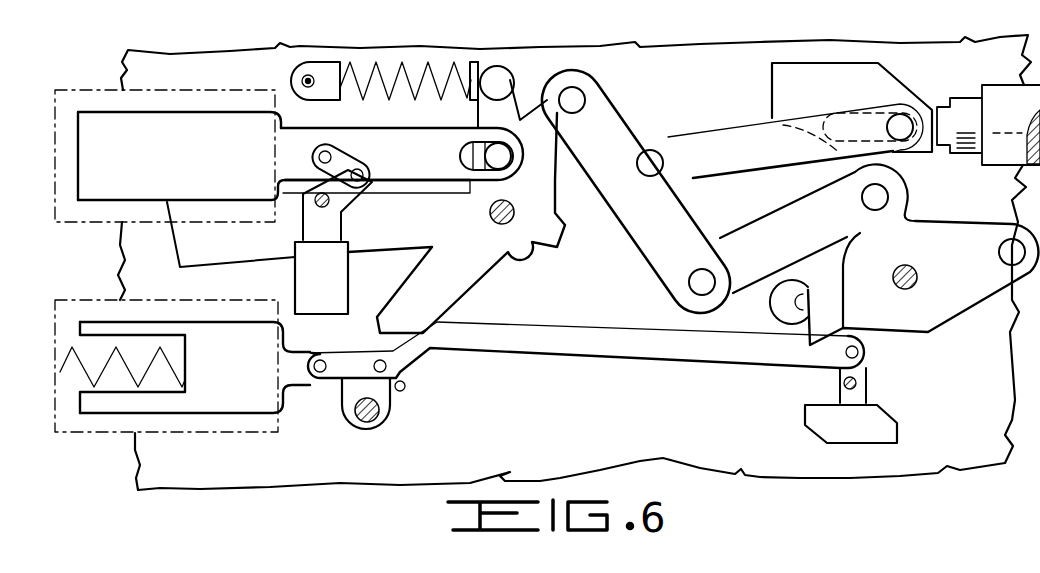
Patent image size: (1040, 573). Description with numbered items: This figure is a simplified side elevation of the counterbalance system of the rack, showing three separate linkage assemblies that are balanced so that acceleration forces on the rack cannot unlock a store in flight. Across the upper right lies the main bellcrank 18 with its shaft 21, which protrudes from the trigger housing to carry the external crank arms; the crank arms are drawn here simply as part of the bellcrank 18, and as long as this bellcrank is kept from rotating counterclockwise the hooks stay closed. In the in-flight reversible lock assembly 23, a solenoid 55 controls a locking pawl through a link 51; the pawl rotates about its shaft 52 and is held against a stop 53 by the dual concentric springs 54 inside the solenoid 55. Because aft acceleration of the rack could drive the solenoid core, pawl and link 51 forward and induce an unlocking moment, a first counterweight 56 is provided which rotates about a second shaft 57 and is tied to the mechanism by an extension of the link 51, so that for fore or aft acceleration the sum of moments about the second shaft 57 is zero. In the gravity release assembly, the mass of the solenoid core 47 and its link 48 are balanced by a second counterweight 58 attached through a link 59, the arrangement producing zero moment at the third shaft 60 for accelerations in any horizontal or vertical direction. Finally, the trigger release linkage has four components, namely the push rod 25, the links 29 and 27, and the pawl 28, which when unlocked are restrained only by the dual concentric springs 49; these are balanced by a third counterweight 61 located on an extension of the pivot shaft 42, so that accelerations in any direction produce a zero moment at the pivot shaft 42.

The main bellcrank 18 is at (953, 222).
The shaft 21 is at (917, 275).
The in-flight reversible lock assembly 23 is at (396, 422).
The push rod 25 is at (712, 130).
The link 27 is at (620, 108).
The pawl 28 is at (479, 281).
The link 29 is at (752, 222).
The pivot shaft 42 is at (515, 212).
The solenoid core 47 is at (180, 144).
The link 48 is at (443, 145).
The dual concentric springs 49 is at (393, 65).
The link 51 is at (348, 378).
The shaft 52 is at (370, 424).
The stop 53 is at (406, 386).
The dual concentric springs 54 is at (113, 378).
The solenoid 55 is at (258, 386).
The first counterweight 56 is at (855, 444).
The second shaft 57 is at (843, 383).
The second counterweight 58 is at (335, 278).
The link 59 is at (334, 158).
The third shaft 60 is at (310, 195).
The third counterweight 61 is at (206, 262).